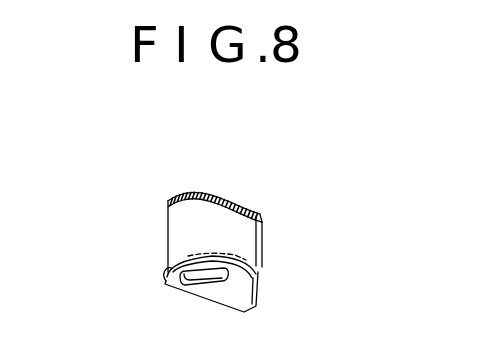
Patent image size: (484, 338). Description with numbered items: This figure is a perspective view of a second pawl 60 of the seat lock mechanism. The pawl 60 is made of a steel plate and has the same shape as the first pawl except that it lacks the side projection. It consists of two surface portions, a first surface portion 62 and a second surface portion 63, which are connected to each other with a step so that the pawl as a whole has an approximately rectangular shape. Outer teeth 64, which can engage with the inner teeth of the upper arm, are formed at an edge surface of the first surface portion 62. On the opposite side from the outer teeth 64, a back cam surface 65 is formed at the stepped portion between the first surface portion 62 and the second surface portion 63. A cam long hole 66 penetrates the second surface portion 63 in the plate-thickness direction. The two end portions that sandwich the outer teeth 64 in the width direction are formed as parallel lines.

The second pawl 60 is at (195, 183).
The first surface portion 62 is at (175, 226).
The second surface portion 63 is at (246, 300).
The outer teeth 64 is at (225, 199).
The back cam surface 65 is at (249, 259).
The cam long hole 66 is at (178, 285).